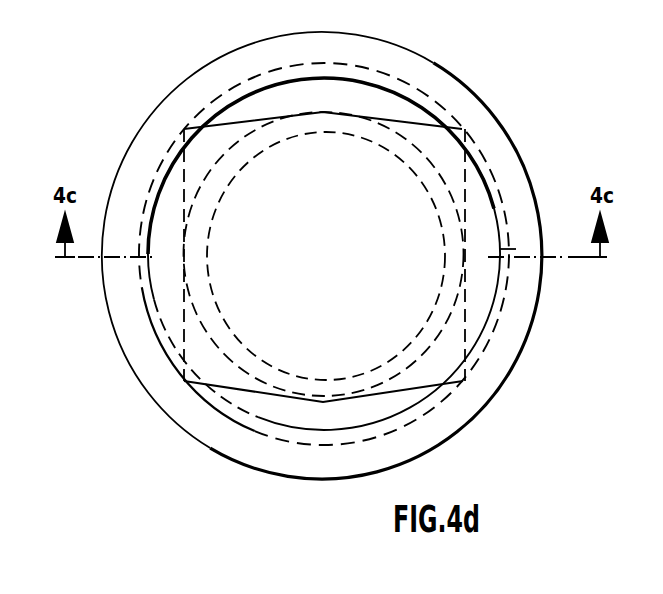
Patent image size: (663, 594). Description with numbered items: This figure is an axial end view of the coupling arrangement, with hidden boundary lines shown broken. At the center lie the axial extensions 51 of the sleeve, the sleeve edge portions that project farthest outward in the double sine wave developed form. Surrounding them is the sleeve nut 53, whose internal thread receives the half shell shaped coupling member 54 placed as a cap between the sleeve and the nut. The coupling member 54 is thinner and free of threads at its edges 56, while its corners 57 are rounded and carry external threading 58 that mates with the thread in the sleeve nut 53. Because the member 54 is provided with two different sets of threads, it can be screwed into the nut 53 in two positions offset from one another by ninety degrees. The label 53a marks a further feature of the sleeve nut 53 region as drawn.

The axial extensions 51 is at (454, 256).
The sleeve nut 53 is at (520, 332).
The inner ring surface 53a is at (512, 285).
The coupling member 54 is at (440, 148).
The edges 56 is at (512, 249).
The corners 57 is at (497, 173).
The external threading 58 is at (487, 162).